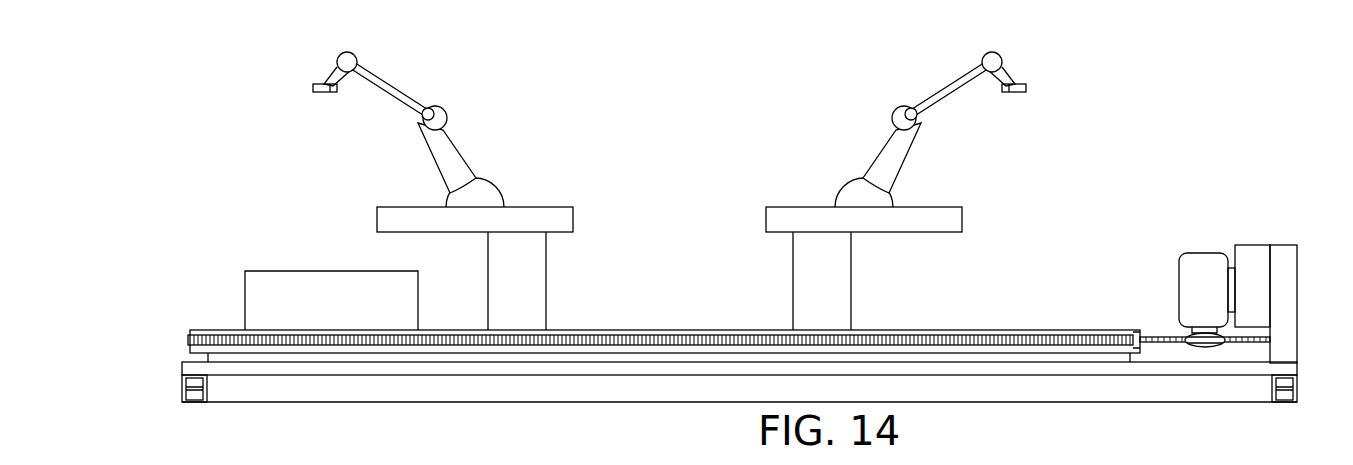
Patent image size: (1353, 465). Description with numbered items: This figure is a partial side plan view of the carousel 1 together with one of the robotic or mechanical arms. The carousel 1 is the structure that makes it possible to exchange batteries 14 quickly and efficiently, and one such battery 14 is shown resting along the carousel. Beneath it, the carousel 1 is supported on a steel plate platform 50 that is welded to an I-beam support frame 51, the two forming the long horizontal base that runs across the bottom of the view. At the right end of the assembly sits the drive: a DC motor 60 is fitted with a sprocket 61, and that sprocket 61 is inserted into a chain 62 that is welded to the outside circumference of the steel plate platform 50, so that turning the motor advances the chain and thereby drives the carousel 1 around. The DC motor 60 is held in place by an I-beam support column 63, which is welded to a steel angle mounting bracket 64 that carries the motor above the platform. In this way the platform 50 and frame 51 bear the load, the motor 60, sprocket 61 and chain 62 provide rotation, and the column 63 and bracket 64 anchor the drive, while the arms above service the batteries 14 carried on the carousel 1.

The carousel 1 is at (968, 330).
The batteries 14 is at (348, 271).
The steel plate platform 50 is at (183, 362).
The I-beam support frame 51 is at (663, 390).
The DC motor 60 is at (1190, 263).
The sprocket 61 is at (1167, 334).
The chain 62 is at (1105, 342).
The I-beam support column 63 is at (1282, 245).
The steel angle mounting bracket 64 is at (1253, 245).